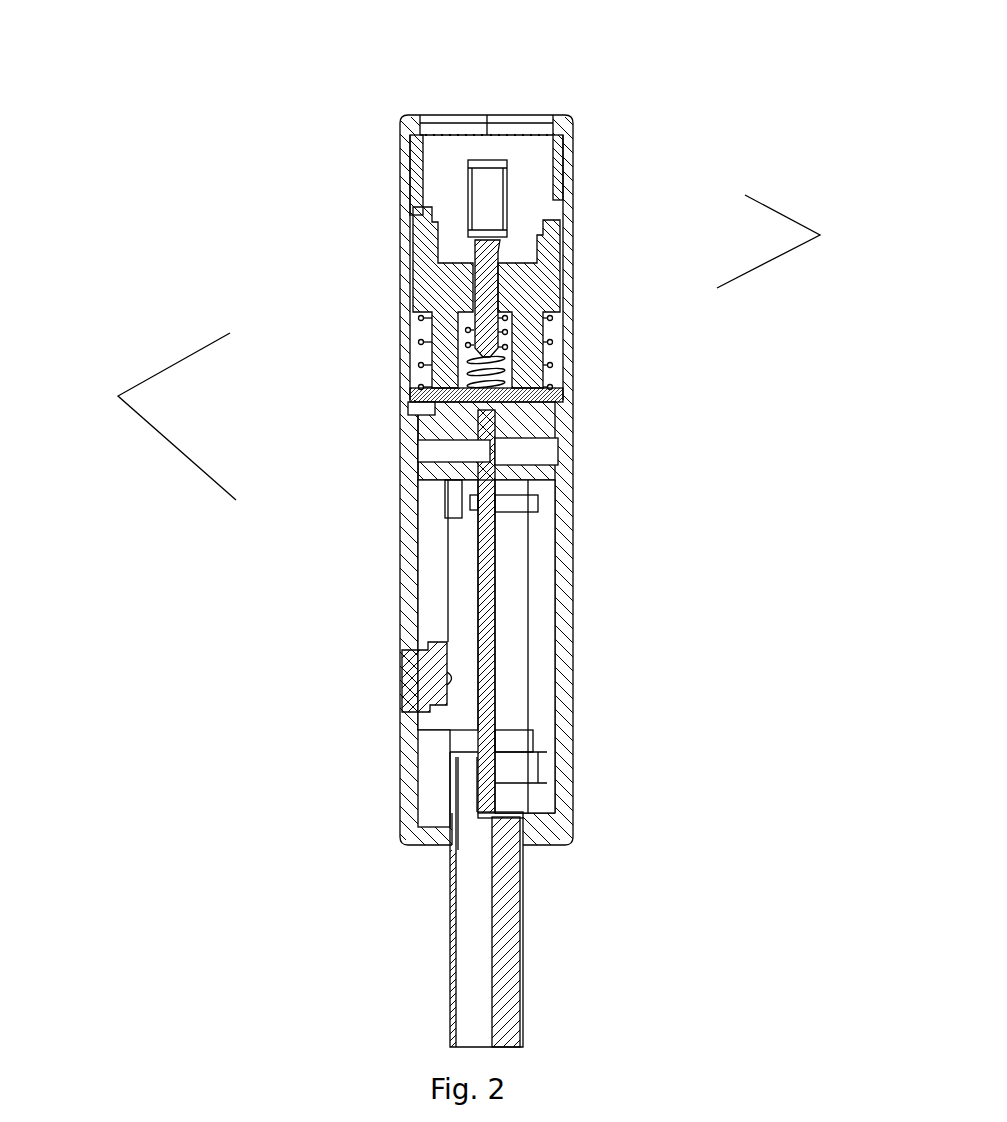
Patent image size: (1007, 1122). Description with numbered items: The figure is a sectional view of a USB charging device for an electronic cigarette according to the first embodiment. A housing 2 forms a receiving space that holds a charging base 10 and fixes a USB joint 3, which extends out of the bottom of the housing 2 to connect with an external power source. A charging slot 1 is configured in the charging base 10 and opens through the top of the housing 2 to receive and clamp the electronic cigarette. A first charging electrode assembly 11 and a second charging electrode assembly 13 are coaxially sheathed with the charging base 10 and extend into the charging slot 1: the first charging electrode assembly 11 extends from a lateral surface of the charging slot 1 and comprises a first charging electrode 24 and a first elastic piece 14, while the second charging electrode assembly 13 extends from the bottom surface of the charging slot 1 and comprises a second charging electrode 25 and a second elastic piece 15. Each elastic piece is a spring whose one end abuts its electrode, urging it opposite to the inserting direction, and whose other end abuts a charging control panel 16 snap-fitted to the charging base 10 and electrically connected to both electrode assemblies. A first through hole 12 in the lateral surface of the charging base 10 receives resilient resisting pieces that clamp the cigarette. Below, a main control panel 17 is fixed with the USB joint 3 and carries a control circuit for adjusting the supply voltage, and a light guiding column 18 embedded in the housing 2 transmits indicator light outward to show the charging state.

The charging slot 1 is at (513, 147).
The housing 2 is at (575, 602).
The USB joint 3 is at (507, 951).
The charging base 10 is at (560, 153).
The first charging electrode assembly 11 is at (790, 241).
The first through hole 12 is at (470, 196).
The second charging electrode assembly 13 is at (149, 416).
The first elastic piece 14 is at (547, 346).
The second elastic piece 15 is at (466, 370).
The charging control panel 16 is at (565, 400).
The main control panel 17 is at (478, 610).
The light guiding column 18 is at (425, 683).
The first charging electrode 24 is at (538, 248).
The second charging electrode 25 is at (473, 285).